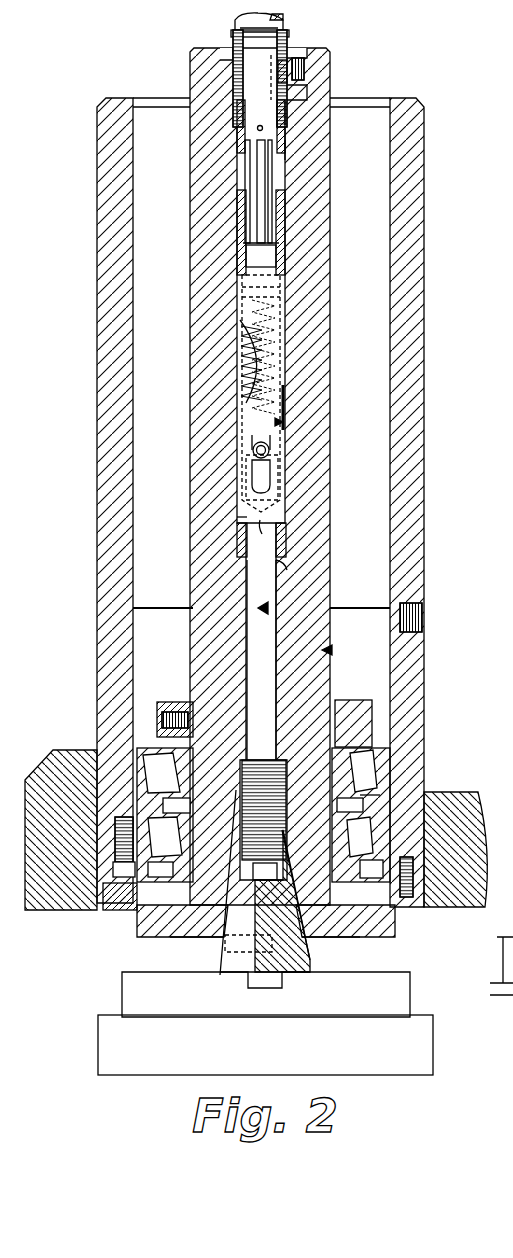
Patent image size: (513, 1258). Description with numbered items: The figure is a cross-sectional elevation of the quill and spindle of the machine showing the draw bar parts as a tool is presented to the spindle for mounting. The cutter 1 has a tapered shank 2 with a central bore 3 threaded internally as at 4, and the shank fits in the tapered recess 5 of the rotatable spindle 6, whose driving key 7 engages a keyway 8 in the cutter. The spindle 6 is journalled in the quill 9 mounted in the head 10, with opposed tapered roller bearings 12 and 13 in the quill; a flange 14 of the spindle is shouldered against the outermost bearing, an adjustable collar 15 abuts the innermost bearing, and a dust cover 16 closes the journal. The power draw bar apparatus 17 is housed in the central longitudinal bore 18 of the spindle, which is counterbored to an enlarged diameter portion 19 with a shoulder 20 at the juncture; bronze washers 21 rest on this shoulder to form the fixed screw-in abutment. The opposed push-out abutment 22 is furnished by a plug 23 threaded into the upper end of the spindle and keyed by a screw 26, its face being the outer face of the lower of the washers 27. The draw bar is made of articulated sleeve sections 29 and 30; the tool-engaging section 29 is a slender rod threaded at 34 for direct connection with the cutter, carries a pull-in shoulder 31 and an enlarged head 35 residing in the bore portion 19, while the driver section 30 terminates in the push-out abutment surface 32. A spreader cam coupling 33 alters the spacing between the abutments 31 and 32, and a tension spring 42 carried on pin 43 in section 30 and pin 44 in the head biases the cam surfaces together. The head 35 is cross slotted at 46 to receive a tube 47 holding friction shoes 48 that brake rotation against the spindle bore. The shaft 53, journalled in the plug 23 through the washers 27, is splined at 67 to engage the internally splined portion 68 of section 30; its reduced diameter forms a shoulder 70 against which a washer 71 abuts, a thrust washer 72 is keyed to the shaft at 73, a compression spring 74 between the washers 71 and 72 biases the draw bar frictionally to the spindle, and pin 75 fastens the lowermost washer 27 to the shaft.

The cutter 1 is at (433, 1035).
The tapered shank 2 is at (305, 960).
The central bore 3 is at (185, 937).
The internal threads 4 is at (160, 912).
The tapered recess 5 is at (340, 932).
The spindle 6 is at (330, 647).
The driving key 7 is at (226, 945).
The keyway 8 is at (282, 982).
The quill 9 is at (410, 713).
The head 10 is at (470, 807).
The tapered roller bearing 12 is at (380, 762).
The tapered roller bearing 13 is at (372, 800).
The flange 14 is at (395, 925).
The adjustable collar 15 is at (352, 700).
The dust cover 16 is at (414, 880).
The power draw bar apparatus 17 is at (262, 608).
The central longitudinal bore 18 is at (218, 640).
The enlarged diameter portion 19 is at (287, 337).
The shoulder 20 is at (287, 555).
The bronze washers 21 is at (288, 535).
The push-out abutment 22 is at (286, 150).
The plug 23 is at (292, 95).
The screw 26 is at (305, 70).
The washers 27 is at (286, 112).
The tool-engaging section 29 is at (258, 585).
The driver section 30 is at (248, 297).
The pull-in shoulder 31 is at (247, 517).
The push-out abutment surface 32 is at (238, 160).
The spreader cam coupling 33 is at (284, 405).
The threaded portion 34 is at (262, 768).
The head 35 is at (261, 538).
The tension spring 42 is at (250, 370).
The pin 43 is at (300, 287).
The pin 44 is at (283, 428).
The cross slot 46 is at (262, 482).
The tube 47 is at (252, 450).
The friction shoes 48 is at (270, 452).
The shaft 53 is at (237, 20).
The splined portion 67 is at (266, 212).
The internally splined portion 68 is at (261, 258).
The shoulder 70 is at (262, 28).
The washer 71 is at (289, 33).
The thrust washer 72 is at (290, 70).
The key 73 is at (271, 85).
The compression spring 74 is at (233, 45).
The pin 75 is at (259, 126).